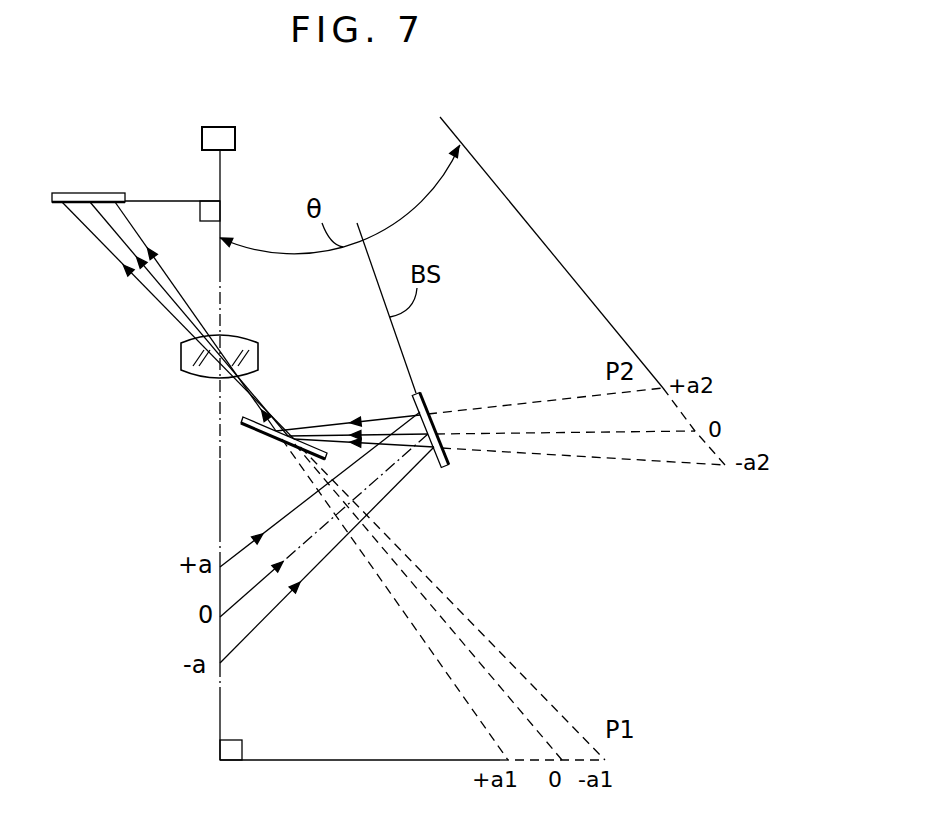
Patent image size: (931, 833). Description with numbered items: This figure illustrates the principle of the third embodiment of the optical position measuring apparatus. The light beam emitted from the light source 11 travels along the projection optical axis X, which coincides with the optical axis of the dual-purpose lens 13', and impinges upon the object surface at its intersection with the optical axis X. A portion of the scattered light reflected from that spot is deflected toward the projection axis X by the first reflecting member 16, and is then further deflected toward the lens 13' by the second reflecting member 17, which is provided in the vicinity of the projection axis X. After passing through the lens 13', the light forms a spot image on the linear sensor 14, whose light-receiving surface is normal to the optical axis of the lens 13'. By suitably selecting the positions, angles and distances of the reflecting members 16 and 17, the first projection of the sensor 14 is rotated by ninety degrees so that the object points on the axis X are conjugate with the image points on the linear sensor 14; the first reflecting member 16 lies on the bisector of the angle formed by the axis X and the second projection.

The light source 11 is at (235, 127).
The dual-purpose lens 13' is at (243, 341).
The linear sensor 14 is at (60, 204).
The first reflecting member 16 is at (445, 468).
The second reflecting member 17 is at (253, 428).
The optical axis X is at (220, 496).